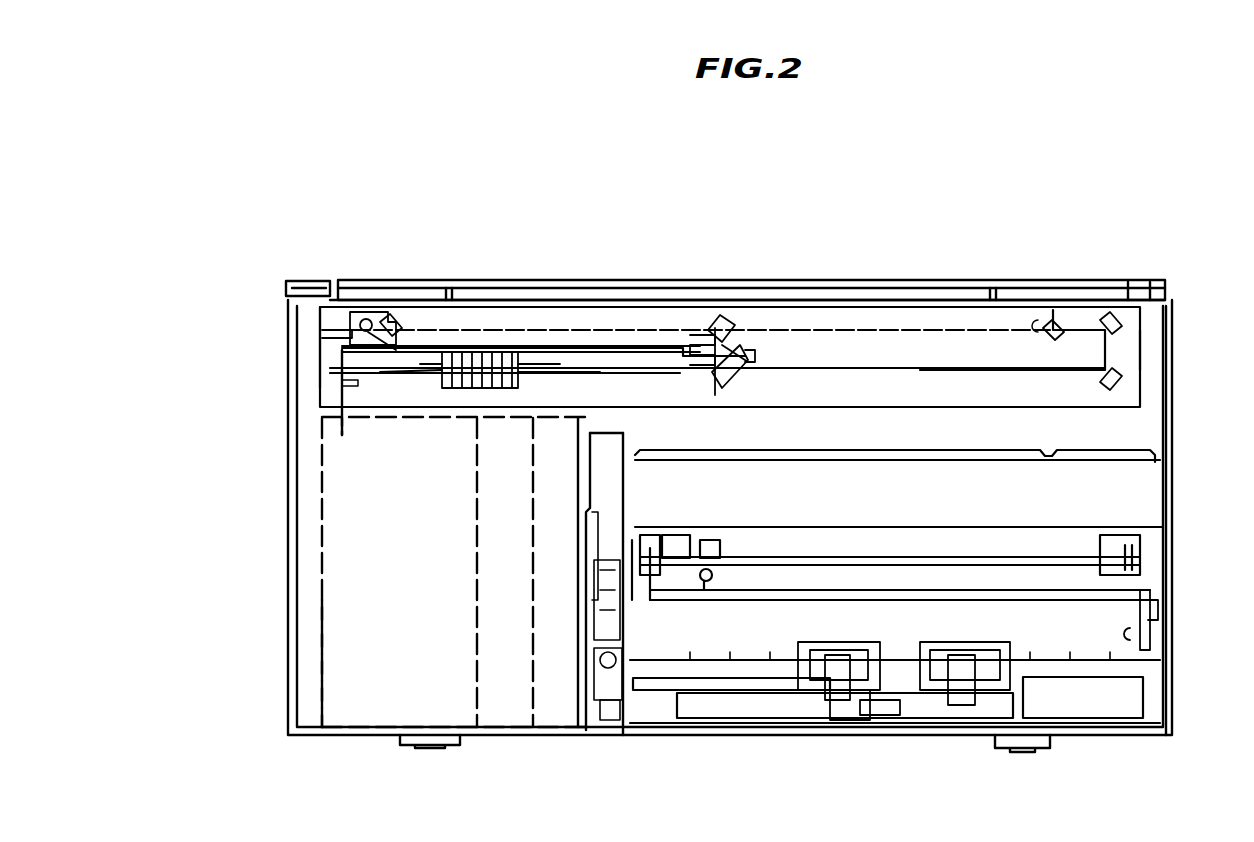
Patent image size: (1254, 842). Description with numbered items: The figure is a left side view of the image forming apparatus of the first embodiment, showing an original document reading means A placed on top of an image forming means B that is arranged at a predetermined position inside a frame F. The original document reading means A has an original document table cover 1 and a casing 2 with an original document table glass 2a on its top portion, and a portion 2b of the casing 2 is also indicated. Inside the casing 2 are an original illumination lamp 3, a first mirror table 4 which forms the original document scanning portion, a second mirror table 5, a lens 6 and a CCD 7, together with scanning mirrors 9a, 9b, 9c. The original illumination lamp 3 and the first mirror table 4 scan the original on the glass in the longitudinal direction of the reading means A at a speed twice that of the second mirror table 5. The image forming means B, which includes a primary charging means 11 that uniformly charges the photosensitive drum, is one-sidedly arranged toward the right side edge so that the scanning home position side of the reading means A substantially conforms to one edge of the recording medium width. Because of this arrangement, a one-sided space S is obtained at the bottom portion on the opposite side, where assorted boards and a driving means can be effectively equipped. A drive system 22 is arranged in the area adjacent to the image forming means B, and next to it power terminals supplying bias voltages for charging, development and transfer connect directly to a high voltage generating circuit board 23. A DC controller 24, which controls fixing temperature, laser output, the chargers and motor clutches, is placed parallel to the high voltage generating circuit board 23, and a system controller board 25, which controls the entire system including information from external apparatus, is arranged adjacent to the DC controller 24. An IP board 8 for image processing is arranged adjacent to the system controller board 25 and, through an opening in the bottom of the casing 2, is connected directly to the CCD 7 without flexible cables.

The original document table cover 1 is at (472, 300).
The casing 2 is at (287, 330).
The original document table glass 2a is at (566, 300).
The paper cassette compartment 2b is at (325, 432).
The original illumination lamp 3 is at (388, 310).
The first mirror table 4 is at (342, 348).
The second mirror table 5 is at (760, 354).
The lens 6 is at (490, 360).
The CCD 7 is at (342, 388).
The image processing board 8 is at (326, 630).
The scanning mirror 9a is at (410, 327).
The scanning mirror 9b is at (735, 330).
The scanning mirror 9c is at (742, 345).
The primary charging means 11 is at (795, 598).
The drive system 22 is at (598, 710).
The high voltage generating circuit board 23 is at (575, 648).
The DC controller 24 is at (533, 620).
The system controller board 25 is at (478, 600).
The original document reading means A is at (1172, 340).
The image forming means B is at (830, 722).
The frame F is at (1172, 636).
The space S is at (365, 553).